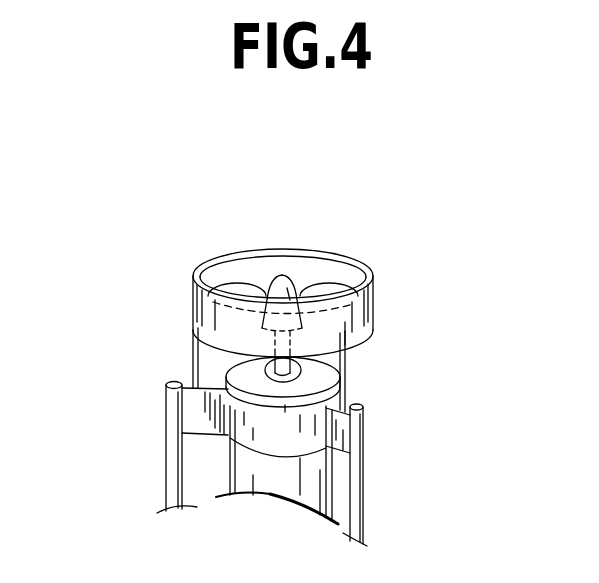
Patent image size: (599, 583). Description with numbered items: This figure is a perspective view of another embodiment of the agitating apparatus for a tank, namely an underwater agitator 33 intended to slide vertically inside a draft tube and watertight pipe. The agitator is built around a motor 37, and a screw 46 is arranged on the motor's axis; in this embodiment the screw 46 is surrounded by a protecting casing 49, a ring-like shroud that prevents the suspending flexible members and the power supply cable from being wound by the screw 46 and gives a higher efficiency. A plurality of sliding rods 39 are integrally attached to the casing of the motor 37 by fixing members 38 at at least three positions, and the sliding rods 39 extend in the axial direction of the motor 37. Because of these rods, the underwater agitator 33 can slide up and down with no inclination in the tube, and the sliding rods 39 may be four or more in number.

The underwater agitator 33 is at (263, 369).
The motor 37 is at (312, 484).
The fixing members 38 is at (193, 412).
The sliding rods 39 is at (165, 487).
The screw 46 is at (320, 284).
The protecting casing 49 is at (358, 320).